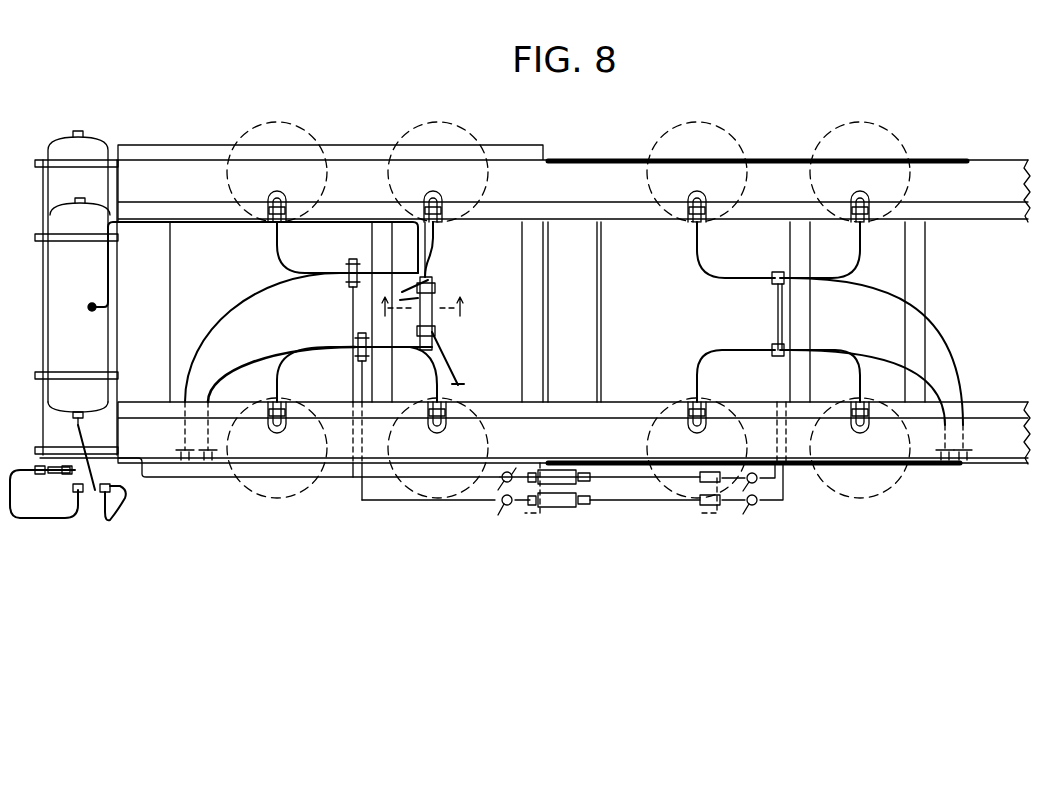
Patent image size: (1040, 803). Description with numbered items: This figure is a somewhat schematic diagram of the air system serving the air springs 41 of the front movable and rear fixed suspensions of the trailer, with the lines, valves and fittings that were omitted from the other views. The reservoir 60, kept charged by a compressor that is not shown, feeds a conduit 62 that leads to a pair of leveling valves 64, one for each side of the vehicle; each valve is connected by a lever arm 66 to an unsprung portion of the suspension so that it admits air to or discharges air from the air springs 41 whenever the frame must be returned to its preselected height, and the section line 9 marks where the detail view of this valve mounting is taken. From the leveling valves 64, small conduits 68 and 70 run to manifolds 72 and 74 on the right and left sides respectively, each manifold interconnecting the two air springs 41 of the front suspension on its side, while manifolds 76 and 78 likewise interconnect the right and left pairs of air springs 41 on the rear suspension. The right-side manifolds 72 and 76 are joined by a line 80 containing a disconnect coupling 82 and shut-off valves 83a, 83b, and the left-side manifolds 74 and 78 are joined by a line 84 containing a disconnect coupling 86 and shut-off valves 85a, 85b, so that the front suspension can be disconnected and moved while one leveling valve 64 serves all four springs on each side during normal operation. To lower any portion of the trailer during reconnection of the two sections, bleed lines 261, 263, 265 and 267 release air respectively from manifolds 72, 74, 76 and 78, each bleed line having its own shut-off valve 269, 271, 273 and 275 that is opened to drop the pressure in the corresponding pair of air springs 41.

The section line 9— 9 is at (420, 307).
The air spring 41 is at (288, 128).
The reservoir 60 is at (97, 342).
The conduit 62 is at (146, 224).
The leveling valve 64 is at (432, 292).
The lever arm 66 is at (434, 272).
The small conduit 68 is at (357, 266).
The small conduit 70 is at (378, 350).
The manifold 72 is at (278, 252).
The manifold 74 is at (300, 366).
The manifold 76 is at (712, 252).
The manifold 78 is at (724, 352).
The line 80 is at (630, 474).
The disconnect coupling 82 is at (570, 470).
The shut-off valve 83a is at (512, 470).
The shut-off valve 83b is at (746, 473).
The line 84 is at (478, 505).
The shut-off valve 85a is at (508, 505).
The shut-off valve 85b is at (758, 508).
The disconnect coupling 86 is at (566, 507).
The bleed line 261 is at (222, 320).
The bleed line 263 is at (257, 352).
The bleed line 265 is at (942, 326).
The bleed line 267 is at (935, 380).
The shut-off valve 269 is at (176, 460).
The shut-off valve 271 is at (211, 460).
The shut-off valve 273 is at (970, 462).
The shut-off valve 275 is at (938, 462).